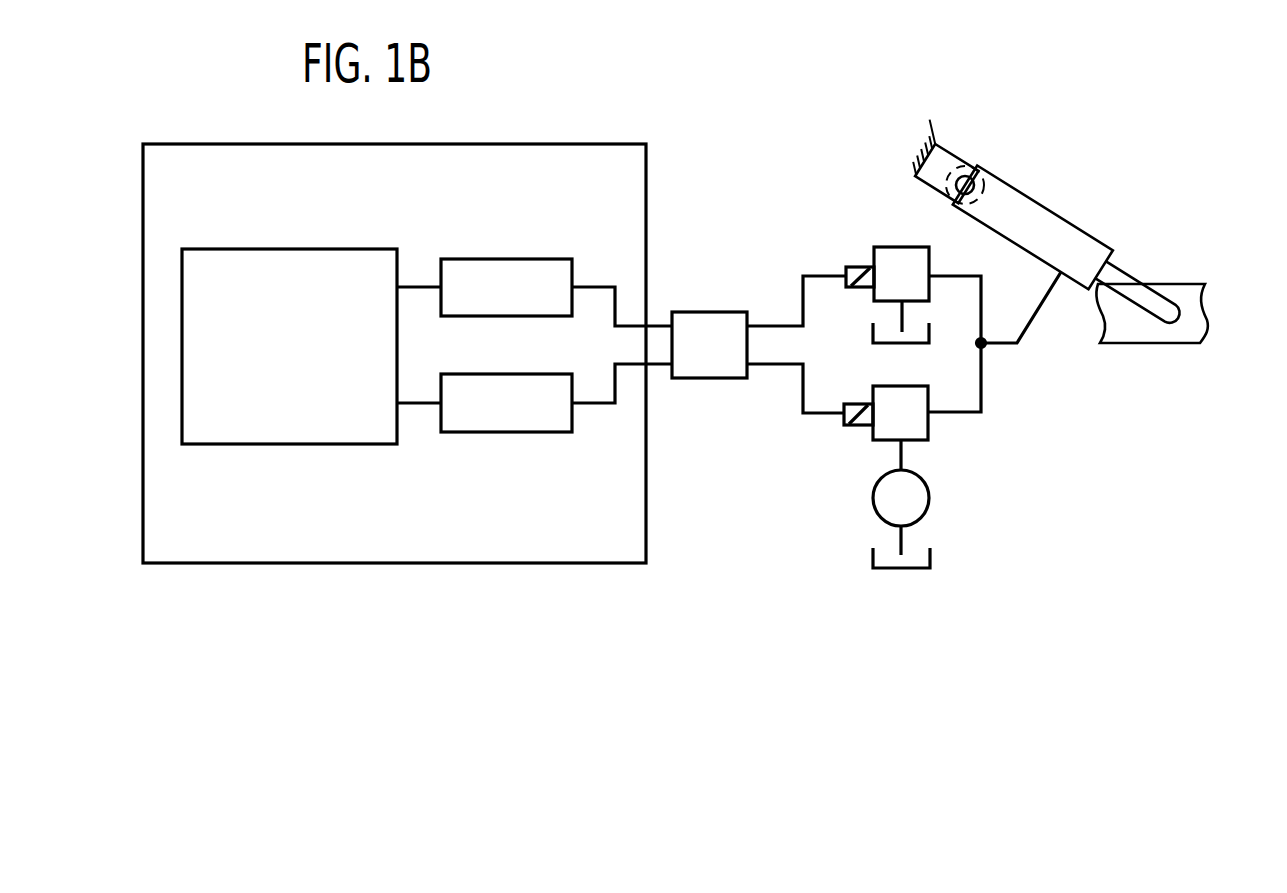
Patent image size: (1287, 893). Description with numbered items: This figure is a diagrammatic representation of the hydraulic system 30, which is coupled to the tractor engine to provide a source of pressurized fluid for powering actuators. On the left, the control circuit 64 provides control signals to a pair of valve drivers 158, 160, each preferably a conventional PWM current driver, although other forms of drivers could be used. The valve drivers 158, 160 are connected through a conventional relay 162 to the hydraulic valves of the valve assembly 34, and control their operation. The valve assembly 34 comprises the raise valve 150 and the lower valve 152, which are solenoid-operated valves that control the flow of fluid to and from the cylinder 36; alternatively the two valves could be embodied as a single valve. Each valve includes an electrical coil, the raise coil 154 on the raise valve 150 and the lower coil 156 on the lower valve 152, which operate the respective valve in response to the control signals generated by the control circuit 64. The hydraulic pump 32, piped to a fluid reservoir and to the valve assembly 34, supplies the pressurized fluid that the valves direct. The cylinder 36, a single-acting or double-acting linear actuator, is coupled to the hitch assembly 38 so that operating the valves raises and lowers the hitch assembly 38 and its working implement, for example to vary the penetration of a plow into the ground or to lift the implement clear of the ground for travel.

The hydraulic system 30 is at (1113, 190).
The hydraulic pump 32 is at (872, 500).
The valve assembly 34 is at (1038, 430).
The cylinder 36 is at (1012, 182).
The hitch assembly 38 is at (1193, 274).
The control circuit 64 is at (289, 346).
The raise valve 150 is at (897, 247).
The lower valve 152 is at (930, 431).
The raise coil 154 is at (858, 267).
The lower coil 156 is at (862, 426).
The valve driver 158 is at (505, 258).
The valve driver 160 is at (490, 433).
The relay 162 is at (728, 357).